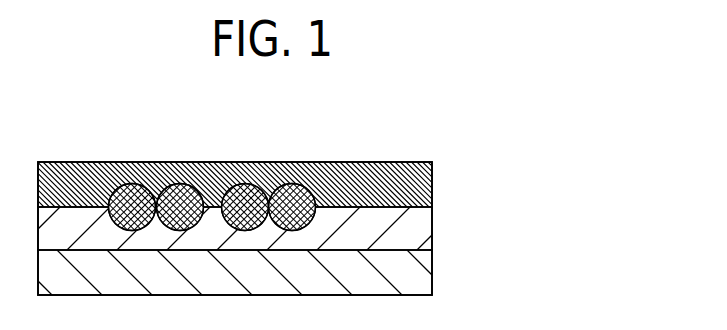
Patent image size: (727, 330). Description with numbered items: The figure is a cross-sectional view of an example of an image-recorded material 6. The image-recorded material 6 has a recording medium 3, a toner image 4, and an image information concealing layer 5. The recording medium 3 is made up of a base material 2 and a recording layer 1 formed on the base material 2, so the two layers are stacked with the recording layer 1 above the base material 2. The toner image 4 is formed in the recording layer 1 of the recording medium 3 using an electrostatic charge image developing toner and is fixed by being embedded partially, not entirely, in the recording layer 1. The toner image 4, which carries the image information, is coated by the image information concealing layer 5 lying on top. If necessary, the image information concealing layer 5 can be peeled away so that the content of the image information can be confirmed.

The recording layer 1 is at (428, 221).
The base material 2 is at (253, 272).
The recording medium 3 is at (280, 251).
The toner image 4 is at (290, 162).
The image information concealing layer 5 is at (430, 181).
The image-recorded material 6 is at (306, 194).